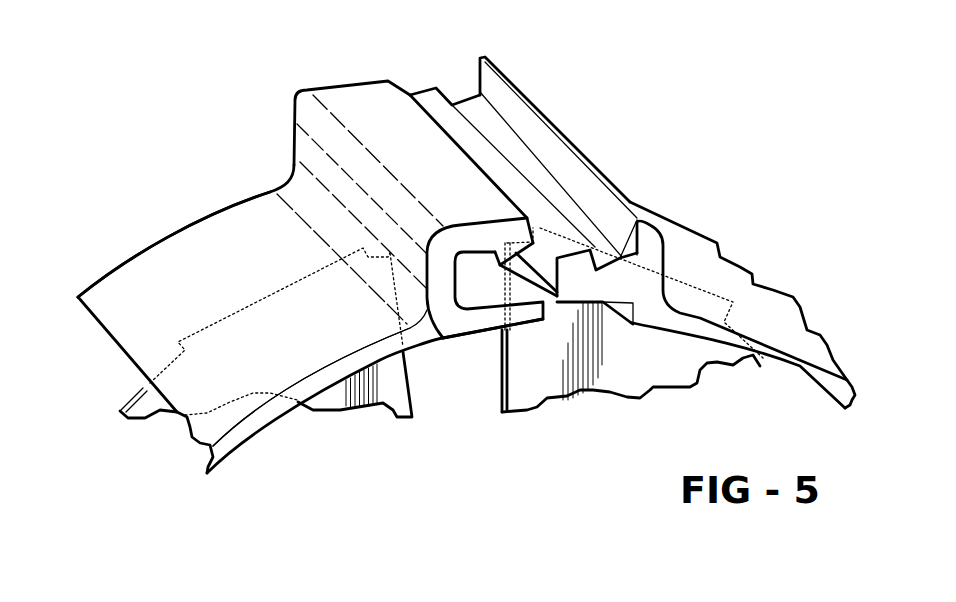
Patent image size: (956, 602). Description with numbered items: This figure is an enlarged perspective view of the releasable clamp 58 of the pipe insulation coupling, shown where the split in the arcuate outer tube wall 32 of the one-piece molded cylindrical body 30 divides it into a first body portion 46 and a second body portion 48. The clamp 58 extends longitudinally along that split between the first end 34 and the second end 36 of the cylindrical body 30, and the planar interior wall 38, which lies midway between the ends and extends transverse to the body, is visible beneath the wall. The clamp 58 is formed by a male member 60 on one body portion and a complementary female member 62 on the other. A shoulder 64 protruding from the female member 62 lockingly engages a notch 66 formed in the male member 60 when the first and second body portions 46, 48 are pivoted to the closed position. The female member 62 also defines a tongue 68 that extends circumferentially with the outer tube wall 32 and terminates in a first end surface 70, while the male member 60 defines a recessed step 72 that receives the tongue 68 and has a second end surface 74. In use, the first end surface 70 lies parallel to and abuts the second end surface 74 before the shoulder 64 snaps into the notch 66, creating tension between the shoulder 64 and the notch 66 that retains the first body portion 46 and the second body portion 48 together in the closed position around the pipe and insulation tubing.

The cylindrical body 30 is at (77, 293).
The outer tube wall 32 is at (251, 240).
The first end 34 is at (182, 229).
The second end 36 is at (240, 433).
The planar interior wall 38 is at (528, 406).
The first body portion 46 is at (803, 310).
The second body portion 48 is at (137, 372).
The releasable clamp 58 is at (547, 69).
The male member 60 is at (562, 128).
The female member 62 is at (308, 110).
The shoulder 64 is at (490, 255).
The notch 66 is at (636, 208).
The tongue 68 is at (483, 321).
The first end surface 70 is at (548, 318).
The recessed step 72 is at (599, 306).
The second end surface 74 is at (615, 306).